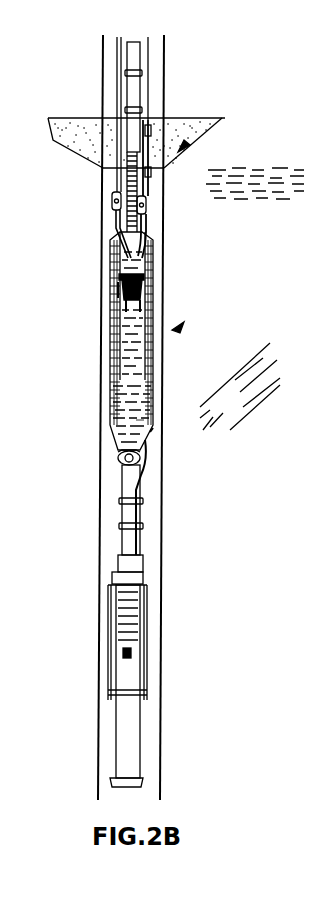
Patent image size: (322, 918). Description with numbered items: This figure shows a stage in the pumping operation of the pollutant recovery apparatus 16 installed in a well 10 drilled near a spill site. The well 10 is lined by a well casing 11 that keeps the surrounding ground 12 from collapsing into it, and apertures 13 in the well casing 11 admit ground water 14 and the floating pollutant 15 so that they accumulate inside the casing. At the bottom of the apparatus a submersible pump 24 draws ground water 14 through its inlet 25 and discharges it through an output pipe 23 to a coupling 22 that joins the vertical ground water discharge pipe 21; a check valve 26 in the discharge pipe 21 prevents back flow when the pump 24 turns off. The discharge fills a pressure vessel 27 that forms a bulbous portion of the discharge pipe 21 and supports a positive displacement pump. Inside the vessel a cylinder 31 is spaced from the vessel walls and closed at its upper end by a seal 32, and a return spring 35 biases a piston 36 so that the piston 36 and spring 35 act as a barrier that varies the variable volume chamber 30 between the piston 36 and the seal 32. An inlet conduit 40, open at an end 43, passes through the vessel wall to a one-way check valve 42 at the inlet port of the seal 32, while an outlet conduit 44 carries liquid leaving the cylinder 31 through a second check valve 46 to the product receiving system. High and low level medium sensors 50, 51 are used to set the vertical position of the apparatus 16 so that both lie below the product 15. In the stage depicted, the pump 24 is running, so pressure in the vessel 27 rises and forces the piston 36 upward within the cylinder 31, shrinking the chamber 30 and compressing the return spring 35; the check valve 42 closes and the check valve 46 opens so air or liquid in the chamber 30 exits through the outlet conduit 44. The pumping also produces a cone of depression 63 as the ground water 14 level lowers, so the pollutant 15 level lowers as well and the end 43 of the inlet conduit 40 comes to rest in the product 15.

The well 10 is at (180, 328).
The well casing 11 is at (157, 402).
The ground 12 is at (240, 413).
The apertures 13 is at (140, 424).
The ground water 14 is at (240, 191).
The pollutant 15 is at (222, 118).
The recovery apparatus 16 is at (152, 434).
The ground water discharge pipe 21 is at (137, 60).
The coupling 22 is at (118, 458).
The output pipe 23 is at (130, 487).
The submersible pump 24 is at (135, 724).
The inlet 25 is at (131, 653).
The check valve 26 is at (133, 92).
The pressure vessel 27 is at (153, 362).
The variable volume chamber 30 is at (118, 290).
The cylinder 31 is at (140, 368).
The seal 32 is at (145, 278).
The return spring 35 is at (142, 288).
The piston 36 is at (126, 305).
The inlet conduit 40 is at (150, 230).
The one-way check valve 42 is at (147, 206).
The end 43 is at (117, 118).
The outlet conduit 44 is at (115, 232).
The check valve 46 is at (112, 204).
The high level medium sensor 50 is at (151, 130).
The low level medium sensor 51 is at (151, 172).
The cone of depression 63 is at (184, 145).